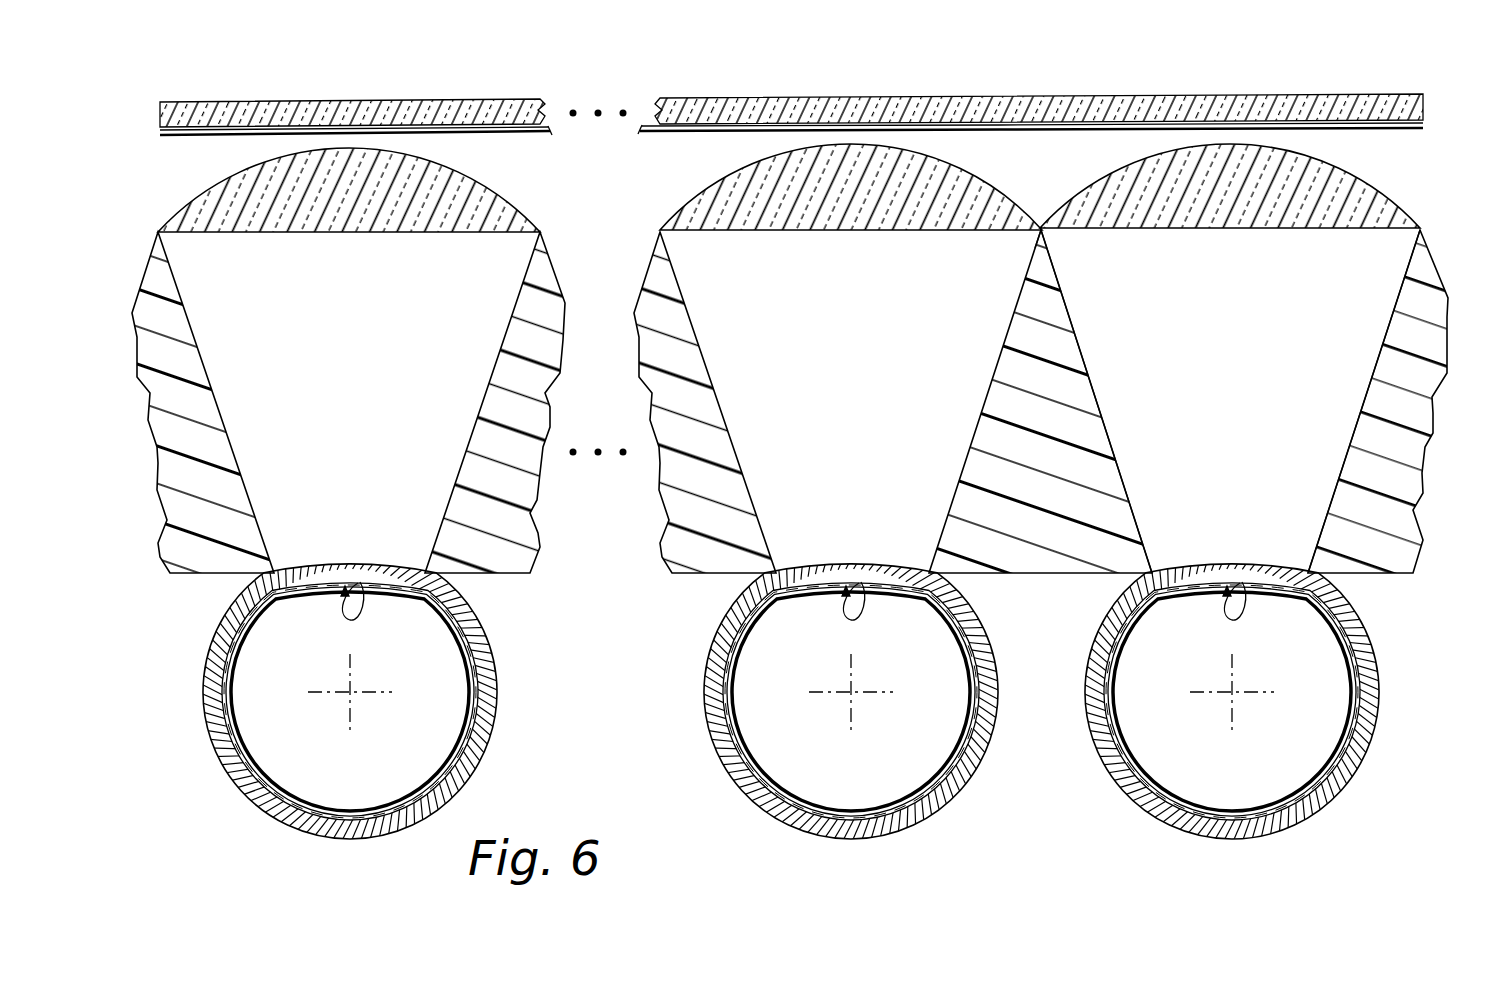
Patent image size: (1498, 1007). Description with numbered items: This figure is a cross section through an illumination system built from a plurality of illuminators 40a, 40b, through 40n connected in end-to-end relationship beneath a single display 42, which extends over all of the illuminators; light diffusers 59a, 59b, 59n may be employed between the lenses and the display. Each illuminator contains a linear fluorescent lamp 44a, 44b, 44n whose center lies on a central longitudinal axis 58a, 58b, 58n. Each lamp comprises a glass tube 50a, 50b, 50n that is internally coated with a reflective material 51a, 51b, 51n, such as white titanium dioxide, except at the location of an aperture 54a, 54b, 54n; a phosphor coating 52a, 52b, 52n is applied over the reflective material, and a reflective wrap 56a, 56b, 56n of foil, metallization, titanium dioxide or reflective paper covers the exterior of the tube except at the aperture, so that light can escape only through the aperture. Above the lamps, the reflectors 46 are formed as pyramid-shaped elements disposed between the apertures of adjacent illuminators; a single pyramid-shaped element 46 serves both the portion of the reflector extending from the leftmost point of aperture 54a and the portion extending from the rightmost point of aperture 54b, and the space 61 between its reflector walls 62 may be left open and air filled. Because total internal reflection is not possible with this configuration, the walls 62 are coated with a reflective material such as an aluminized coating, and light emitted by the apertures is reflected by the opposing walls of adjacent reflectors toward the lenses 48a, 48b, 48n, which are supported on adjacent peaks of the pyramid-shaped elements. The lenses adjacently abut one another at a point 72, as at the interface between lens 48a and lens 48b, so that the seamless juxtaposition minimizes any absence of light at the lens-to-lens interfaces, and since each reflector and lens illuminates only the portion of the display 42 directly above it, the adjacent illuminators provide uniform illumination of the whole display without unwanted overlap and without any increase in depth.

The display 42 is at (343, 102).
The light diffuser 59n is at (507, 135).
The light diffuser 59b is at (707, 133).
The light diffuser 59a is at (1107, 131).
The lens 48n is at (277, 200).
The lens 48b is at (797, 193).
The lens 48a is at (1307, 174).
The illuminator 40n is at (578, 343).
The illuminator 40b is at (646, 495).
The illuminator 40a is at (1436, 512).
The reflector 46 is at (1043, 413).
The point 72 is at (1040, 235).
The space 61 is at (1246, 386).
The reflector wall 62 is at (1372, 360).
The fluorescent lamp 44n is at (354, 684).
The fluorescent lamp 44b is at (855, 684).
The fluorescent lamp 44a is at (1235, 684).
The glass tube 50n is at (379, 691).
The glass tube 50b is at (880, 691).
The glass tube 50a is at (1261, 691).
The reflective material 51n is at (350, 701).
The reflective material 51b is at (851, 701).
The reflective material 51a is at (1232, 701).
The phosphor coating 52n is at (388, 701).
The phosphor coating 52b is at (889, 701).
The phosphor coating 52a is at (1269, 701).
The aperture 54n is at (379, 563).
The aperture 54b is at (880, 563).
The aperture 54a is at (1260, 563).
The reflective wrap 56n is at (384, 701).
The reflective wrap 56b is at (885, 701).
The reflective wrap 56a is at (1266, 701).
The central longitudinal axis 58n is at (366, 707).
The central longitudinal axis 58b is at (867, 707).
The central longitudinal axis 58a is at (1248, 707).